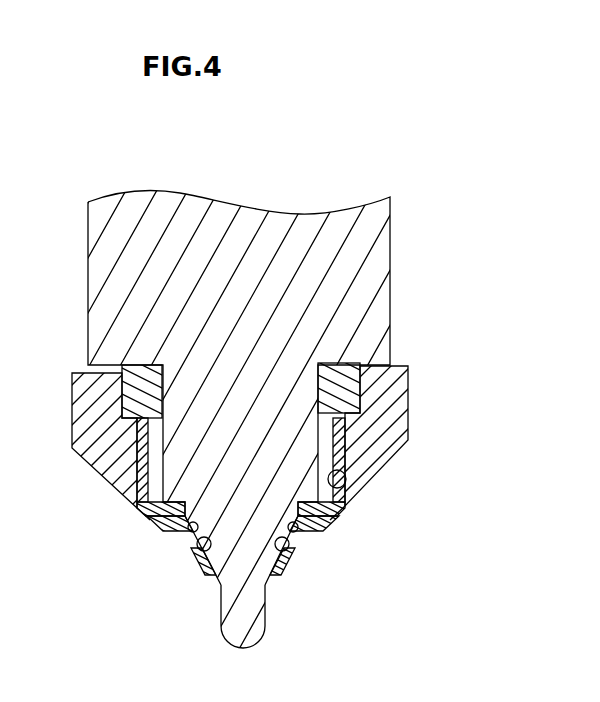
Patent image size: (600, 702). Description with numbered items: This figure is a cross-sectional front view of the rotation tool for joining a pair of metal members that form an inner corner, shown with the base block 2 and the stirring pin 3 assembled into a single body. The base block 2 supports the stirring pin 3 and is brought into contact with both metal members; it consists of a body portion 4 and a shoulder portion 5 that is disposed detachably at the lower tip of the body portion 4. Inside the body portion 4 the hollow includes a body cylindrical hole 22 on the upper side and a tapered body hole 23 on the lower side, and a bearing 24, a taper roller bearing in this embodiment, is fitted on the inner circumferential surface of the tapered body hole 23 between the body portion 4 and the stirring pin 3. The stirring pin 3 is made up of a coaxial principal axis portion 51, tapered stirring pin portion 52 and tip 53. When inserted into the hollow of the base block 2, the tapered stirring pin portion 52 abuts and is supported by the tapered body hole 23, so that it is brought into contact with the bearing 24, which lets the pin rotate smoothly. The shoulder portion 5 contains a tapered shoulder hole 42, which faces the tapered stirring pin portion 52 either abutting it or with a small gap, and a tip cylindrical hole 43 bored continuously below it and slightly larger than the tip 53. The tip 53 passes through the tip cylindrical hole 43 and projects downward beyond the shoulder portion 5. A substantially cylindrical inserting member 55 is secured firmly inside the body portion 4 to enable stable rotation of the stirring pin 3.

The base block 2 is at (80, 361).
The stirring pin 3 is at (300, 351).
The body portion 4 is at (410, 363).
The shoulder portion 5 is at (253, 592).
The body cylindrical hole 22 is at (352, 495).
The tapered body hole 23 is at (239, 548).
The bearing 24 is at (160, 527).
The tapered shoulder hole 42 is at (192, 556).
The tip cylindrical hole 43 is at (268, 610).
The principal axis portion 51 is at (343, 430).
The tapered stirring pin portion 52 is at (210, 578).
The tip 53 is at (265, 626).
The inserting member 55 is at (355, 390).